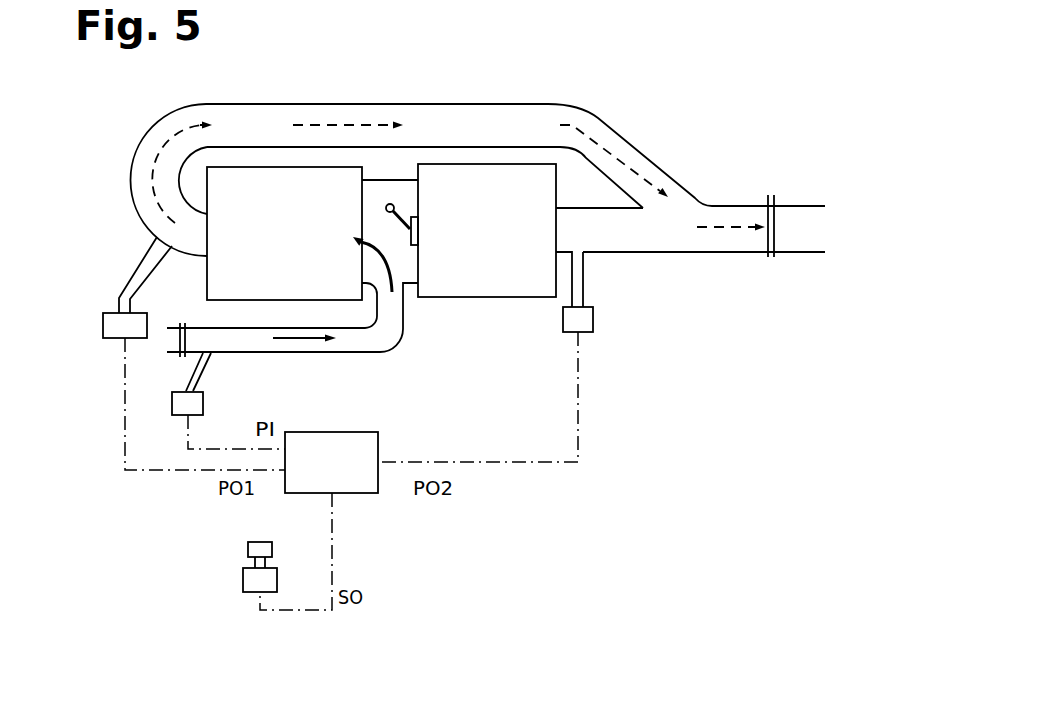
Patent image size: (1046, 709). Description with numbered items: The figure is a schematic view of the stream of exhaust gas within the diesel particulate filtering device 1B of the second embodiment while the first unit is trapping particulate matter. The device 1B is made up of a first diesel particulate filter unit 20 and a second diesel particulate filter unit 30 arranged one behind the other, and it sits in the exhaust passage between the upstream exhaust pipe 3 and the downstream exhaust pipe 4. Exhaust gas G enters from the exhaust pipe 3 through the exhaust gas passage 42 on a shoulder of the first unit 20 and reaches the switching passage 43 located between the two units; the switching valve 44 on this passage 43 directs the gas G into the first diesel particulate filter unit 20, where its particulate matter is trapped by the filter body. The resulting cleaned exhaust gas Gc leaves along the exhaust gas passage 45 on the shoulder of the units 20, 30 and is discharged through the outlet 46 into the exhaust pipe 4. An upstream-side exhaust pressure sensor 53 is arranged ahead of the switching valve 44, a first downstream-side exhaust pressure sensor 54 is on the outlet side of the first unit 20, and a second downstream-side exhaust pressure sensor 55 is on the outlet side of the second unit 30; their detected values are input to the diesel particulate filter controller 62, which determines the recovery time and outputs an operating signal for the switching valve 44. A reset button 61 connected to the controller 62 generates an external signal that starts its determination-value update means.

The diesel particulate filtering device 1B is at (572, 69).
The exhaust gas passage 45 is at (430, 118).
The cleaned exhaust gas Gc is at (150, 192).
The first diesel particulate filter unit 20 is at (293, 256).
The second diesel particulate filter unit 30 is at (503, 254).
The switching valve 44 is at (402, 228).
The switching passage 43 is at (399, 293).
The exhaust gas passage 42 is at (277, 345).
The exhaust gas G is at (303, 349).
The exhaust pipe 3 is at (174, 358).
The first downstream-side exhaust pressure sensor 54 is at (120, 330).
The upstream-side exhaust pressure sensor 53 is at (183, 412).
The outlet 46 is at (667, 240).
The exhaust pipe 4 is at (792, 238).
The second downstream-side exhaust pressure sensor 55 is at (583, 317).
The diesel particulate filter controller 62 is at (365, 470).
The reset button 61 is at (243, 573).